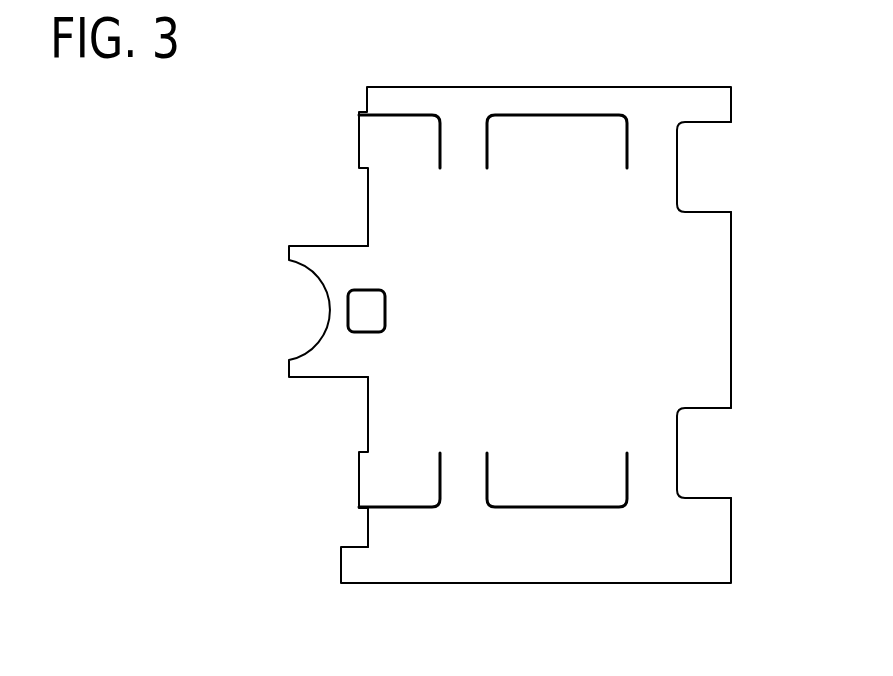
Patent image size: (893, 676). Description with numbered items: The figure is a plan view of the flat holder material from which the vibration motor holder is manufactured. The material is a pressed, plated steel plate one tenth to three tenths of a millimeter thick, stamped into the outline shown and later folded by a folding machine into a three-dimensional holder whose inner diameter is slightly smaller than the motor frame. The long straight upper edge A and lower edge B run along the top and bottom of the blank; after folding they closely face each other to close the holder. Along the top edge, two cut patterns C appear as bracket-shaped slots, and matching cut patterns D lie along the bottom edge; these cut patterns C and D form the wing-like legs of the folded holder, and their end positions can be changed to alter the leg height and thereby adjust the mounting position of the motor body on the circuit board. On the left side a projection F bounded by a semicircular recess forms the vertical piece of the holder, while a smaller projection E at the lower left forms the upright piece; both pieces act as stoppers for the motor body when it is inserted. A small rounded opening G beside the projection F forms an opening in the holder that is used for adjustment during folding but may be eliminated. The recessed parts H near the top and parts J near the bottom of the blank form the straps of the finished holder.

The upper edge A is at (577, 97).
The lower edge B is at (617, 553).
The cut pattern C is at (396, 135).
The cut pattern D is at (400, 486).
The small projection E is at (351, 563).
The projection F is at (318, 255).
The opening G is at (362, 308).
The part H is at (458, 150).
The part J is at (463, 468).